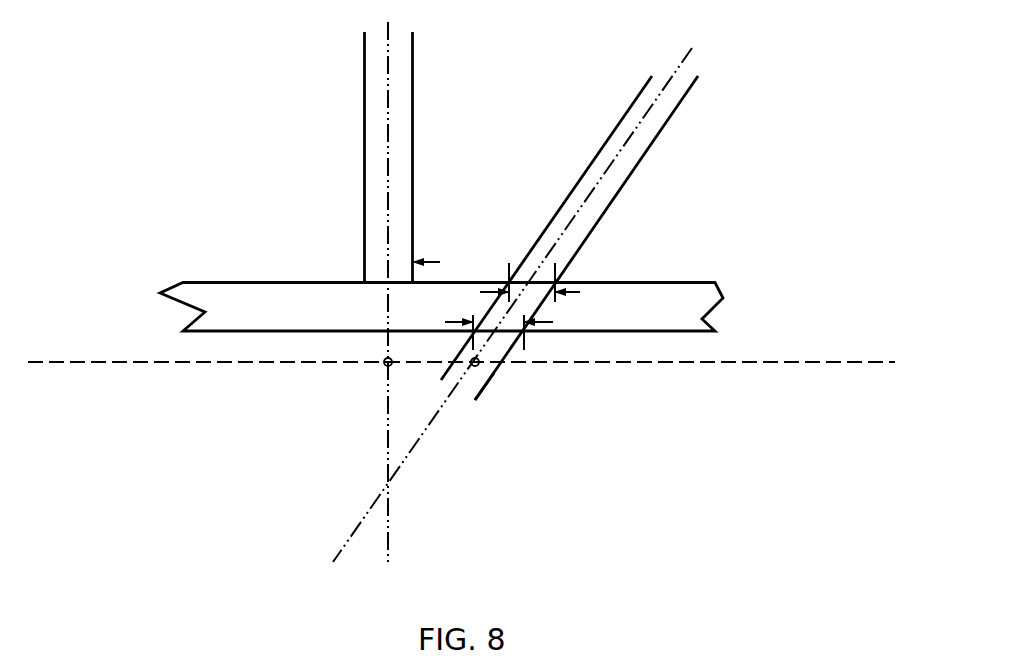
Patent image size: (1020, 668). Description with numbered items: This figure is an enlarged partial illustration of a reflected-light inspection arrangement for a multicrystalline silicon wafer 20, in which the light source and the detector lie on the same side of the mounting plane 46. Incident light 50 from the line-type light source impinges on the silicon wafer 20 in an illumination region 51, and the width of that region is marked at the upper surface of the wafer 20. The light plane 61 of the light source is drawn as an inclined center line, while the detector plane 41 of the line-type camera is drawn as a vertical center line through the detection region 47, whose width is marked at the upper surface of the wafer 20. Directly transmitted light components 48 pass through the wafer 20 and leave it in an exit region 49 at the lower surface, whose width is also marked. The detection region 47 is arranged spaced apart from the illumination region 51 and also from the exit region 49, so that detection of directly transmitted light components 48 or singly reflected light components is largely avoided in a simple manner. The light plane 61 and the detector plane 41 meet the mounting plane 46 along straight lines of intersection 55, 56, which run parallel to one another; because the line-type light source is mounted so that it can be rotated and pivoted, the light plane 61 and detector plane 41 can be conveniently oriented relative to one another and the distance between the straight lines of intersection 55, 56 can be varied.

The multicrystalline silicon wafer 20 is at (268, 309).
The detector plane 41 is at (388, 119).
The mounting plane 46 is at (55, 362).
The detection region 47 is at (364, 262).
The directly transmitted light components 48 is at (483, 373).
The exit region 49 is at (545, 325).
The incident light 50 is at (647, 133).
The illumination region 51 is at (577, 293).
The straight line of intersection 55 is at (472, 364).
The straight line of intersection 56 is at (385, 364).
The light plane 61 is at (681, 68).